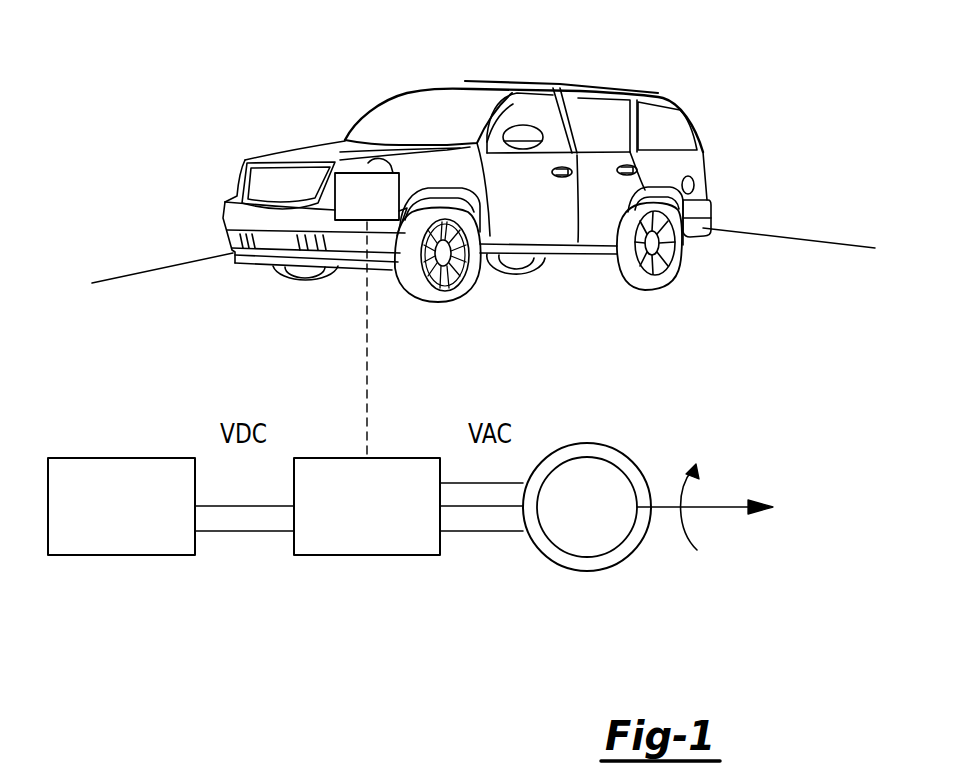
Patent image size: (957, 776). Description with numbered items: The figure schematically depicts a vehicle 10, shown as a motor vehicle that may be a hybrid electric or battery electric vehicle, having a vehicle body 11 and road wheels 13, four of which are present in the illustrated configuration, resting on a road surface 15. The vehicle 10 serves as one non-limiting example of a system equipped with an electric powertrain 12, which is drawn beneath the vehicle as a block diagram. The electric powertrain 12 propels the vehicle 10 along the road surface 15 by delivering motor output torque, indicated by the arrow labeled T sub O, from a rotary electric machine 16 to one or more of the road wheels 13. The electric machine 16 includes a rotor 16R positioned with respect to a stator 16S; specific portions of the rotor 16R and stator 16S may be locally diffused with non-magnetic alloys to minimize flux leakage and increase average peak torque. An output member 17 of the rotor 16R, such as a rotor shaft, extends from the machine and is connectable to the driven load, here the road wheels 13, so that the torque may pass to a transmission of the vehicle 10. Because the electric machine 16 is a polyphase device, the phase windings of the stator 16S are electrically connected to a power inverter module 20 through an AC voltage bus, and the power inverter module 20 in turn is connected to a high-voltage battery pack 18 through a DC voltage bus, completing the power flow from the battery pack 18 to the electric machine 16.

The vehicle 10 is at (679, 74).
The vehicle body 11 is at (683, 112).
The electric powertrain 12 is at (385, 211).
The road wheels 13 is at (447, 305).
The road surface 15 is at (746, 259).
The rotary electric machine 16 is at (640, 397).
The rotor 16R is at (587, 459).
The stator 16S is at (568, 570).
The output member 17 is at (730, 505).
The high-voltage battery pack 18 is at (120, 557).
The power inverter module 20 is at (366, 557).